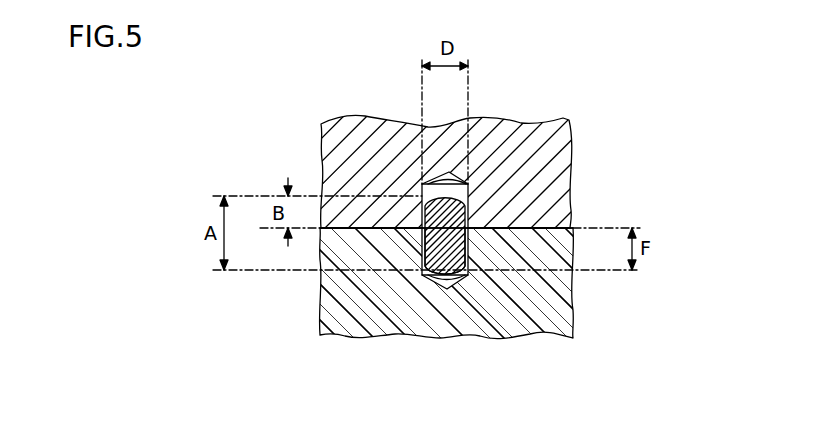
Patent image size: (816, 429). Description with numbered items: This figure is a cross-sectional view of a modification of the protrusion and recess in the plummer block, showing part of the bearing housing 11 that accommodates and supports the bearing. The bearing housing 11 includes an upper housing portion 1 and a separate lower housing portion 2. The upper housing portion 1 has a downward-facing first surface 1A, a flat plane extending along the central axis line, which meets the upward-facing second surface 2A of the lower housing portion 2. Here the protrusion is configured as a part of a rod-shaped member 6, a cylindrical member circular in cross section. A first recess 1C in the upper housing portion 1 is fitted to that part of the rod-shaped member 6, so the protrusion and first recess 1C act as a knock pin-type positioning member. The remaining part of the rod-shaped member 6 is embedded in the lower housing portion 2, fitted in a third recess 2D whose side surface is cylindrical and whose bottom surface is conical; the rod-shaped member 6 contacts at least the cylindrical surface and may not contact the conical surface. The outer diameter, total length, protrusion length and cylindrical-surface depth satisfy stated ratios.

The bearing housing 11 is at (313, 143).
The upper housing portion 1 is at (540, 154).
The first surface 1A is at (350, 230).
The first recess 1C is at (449, 171).
The lower housing portion 2 is at (548, 294).
The second surface 2A is at (555, 228).
The third recess 2D is at (448, 289).
The rod-shaped member 6 is at (466, 238).